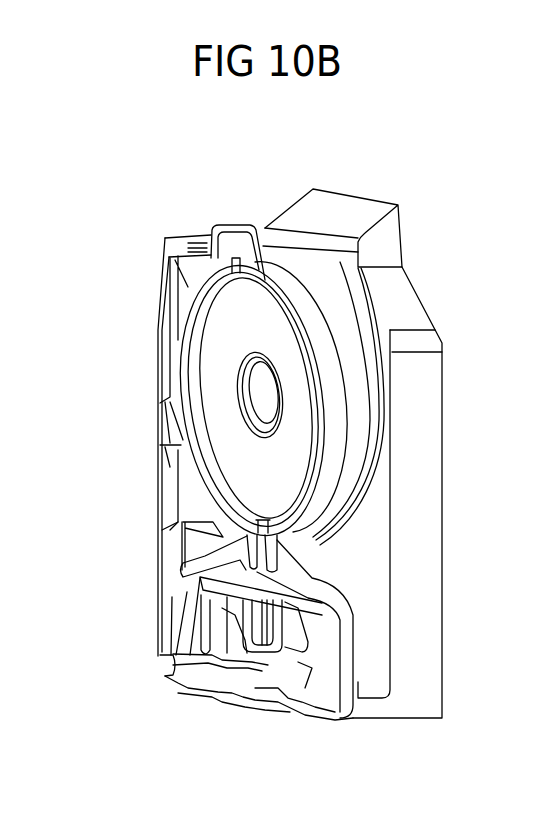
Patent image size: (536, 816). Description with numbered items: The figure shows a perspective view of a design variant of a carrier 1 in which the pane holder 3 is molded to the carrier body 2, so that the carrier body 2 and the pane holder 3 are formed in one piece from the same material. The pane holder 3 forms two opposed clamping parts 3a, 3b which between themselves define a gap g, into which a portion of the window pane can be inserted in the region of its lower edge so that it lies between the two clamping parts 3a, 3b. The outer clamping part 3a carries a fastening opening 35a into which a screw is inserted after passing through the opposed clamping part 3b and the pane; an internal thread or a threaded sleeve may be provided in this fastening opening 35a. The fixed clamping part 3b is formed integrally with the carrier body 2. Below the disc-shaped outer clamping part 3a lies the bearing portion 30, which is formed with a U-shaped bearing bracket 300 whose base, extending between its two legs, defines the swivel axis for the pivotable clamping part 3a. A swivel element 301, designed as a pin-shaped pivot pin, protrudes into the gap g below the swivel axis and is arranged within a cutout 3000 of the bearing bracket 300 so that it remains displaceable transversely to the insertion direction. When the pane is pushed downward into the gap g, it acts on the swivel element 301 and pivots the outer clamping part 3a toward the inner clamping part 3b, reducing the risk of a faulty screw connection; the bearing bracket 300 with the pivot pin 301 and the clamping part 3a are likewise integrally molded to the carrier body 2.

The carrier 1 is at (447, 267).
The carrier body 2 is at (122, 493).
The pane holder 3 is at (152, 206).
The clamping part 3a is at (178, 352).
The clamping part 3b is at (360, 218).
The fastening opening 35a is at (258, 396).
The bearing portion 30 is at (173, 575).
The bearing bracket 300 is at (332, 598).
The swivel element 301 is at (287, 637).
The cutout 3000 is at (242, 647).
The gap g is at (370, 636).